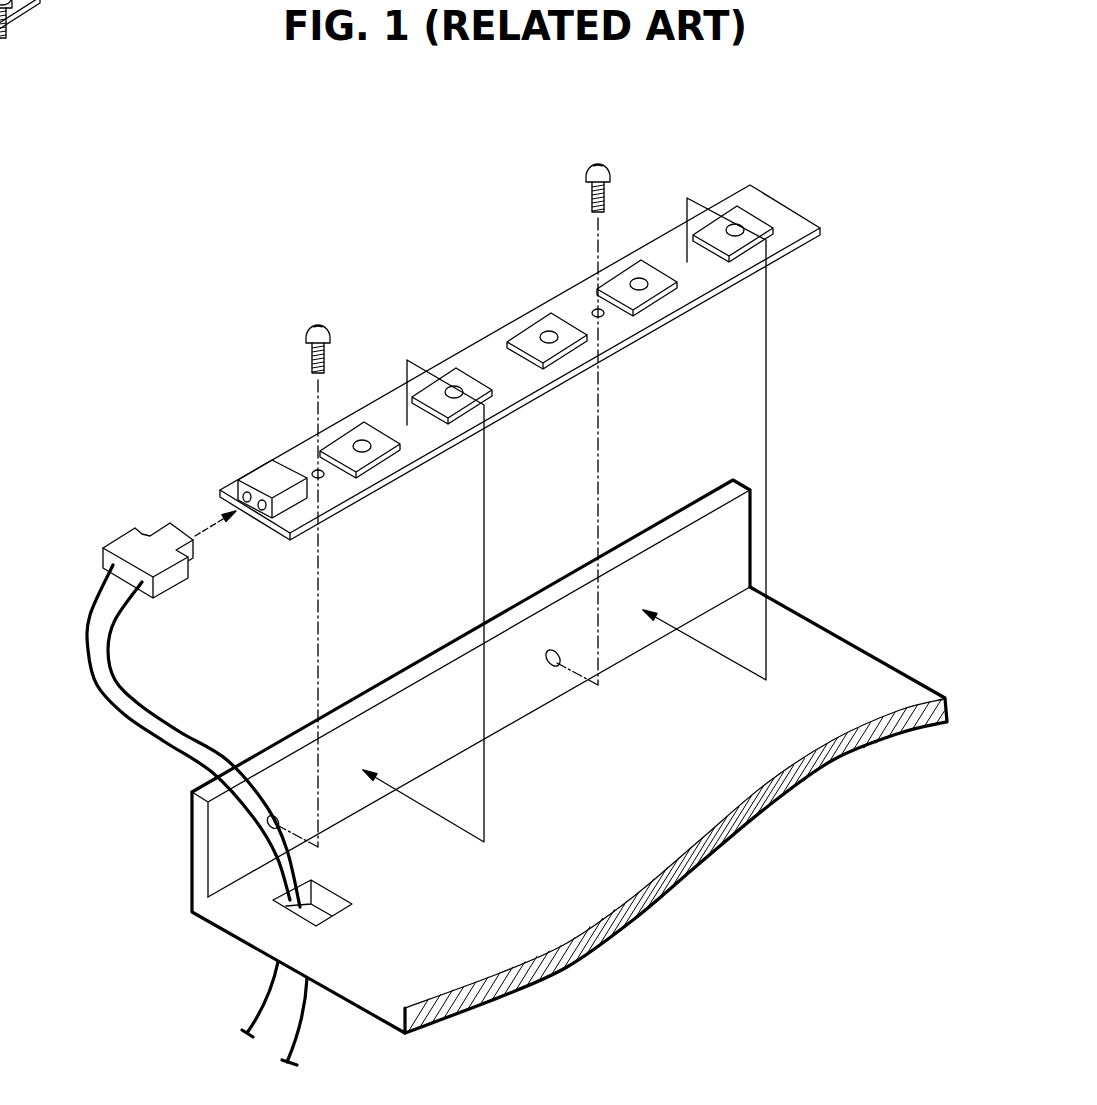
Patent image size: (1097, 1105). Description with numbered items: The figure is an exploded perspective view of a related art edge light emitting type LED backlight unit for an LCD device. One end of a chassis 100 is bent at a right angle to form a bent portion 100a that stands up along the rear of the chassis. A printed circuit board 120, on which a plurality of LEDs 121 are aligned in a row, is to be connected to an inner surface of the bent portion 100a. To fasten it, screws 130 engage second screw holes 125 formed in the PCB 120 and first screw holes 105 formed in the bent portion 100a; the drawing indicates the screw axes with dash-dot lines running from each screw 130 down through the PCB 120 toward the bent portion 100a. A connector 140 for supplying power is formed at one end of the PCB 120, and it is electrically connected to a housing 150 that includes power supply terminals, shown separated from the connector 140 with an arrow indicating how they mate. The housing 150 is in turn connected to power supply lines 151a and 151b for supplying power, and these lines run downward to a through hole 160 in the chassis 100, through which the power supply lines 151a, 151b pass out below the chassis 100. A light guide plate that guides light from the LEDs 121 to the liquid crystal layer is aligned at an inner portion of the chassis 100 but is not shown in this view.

The chassis 100 is at (847, 633).
The bent portion 100a is at (740, 535).
The first screw hole 105 is at (556, 667).
The printed circuit board 120 is at (767, 188).
The LED 121 is at (533, 333).
The second screw hole 125 is at (313, 470).
The screw 130 is at (331, 325).
The connector 140 is at (258, 473).
The housing 150 is at (145, 525).
The power supply line 151a is at (116, 713).
The power supply line 151b is at (158, 730).
The through hole 160 is at (328, 908).